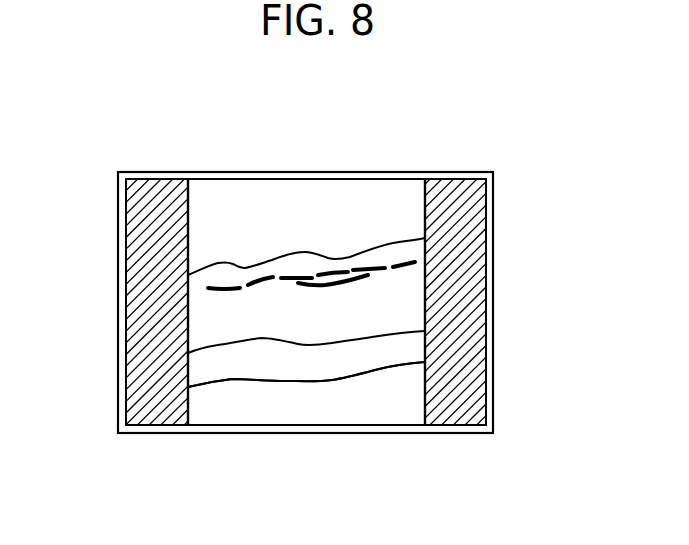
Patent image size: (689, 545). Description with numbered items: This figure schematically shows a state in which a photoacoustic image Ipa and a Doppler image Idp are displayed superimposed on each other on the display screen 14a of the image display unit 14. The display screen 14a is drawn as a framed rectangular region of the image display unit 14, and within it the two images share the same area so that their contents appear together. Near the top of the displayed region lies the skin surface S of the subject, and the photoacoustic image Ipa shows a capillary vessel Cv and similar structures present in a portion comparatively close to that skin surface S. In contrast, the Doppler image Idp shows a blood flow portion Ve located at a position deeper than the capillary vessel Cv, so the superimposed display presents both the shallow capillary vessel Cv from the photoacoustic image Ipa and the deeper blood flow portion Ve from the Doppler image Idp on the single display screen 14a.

The image display unit 14 is at (177, 161).
The display screen 14a is at (148, 208).
The skin surface S is at (353, 257).
The capillary vessel Cv is at (382, 272).
The blood flow portion Ve is at (373, 353).
The photoacoustic image Ipa is at (334, 404).
The Doppler image Idp is at (306, 374).